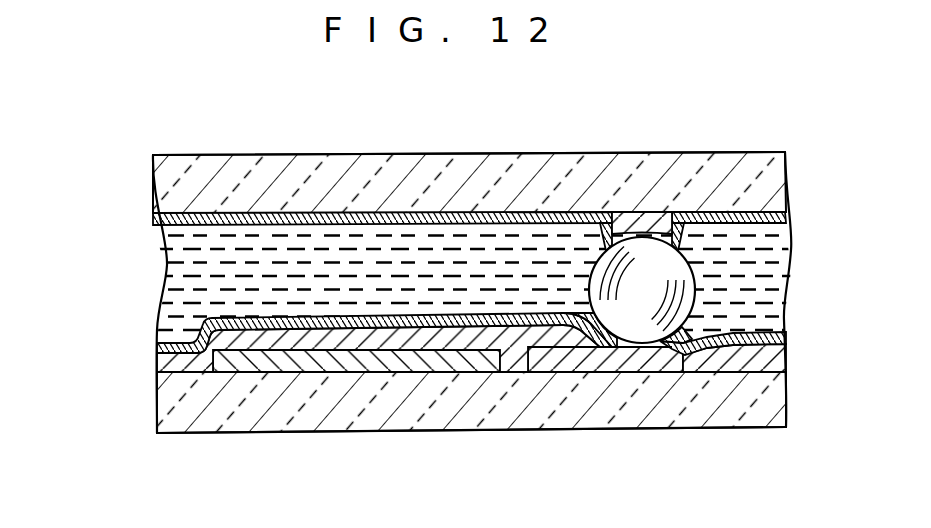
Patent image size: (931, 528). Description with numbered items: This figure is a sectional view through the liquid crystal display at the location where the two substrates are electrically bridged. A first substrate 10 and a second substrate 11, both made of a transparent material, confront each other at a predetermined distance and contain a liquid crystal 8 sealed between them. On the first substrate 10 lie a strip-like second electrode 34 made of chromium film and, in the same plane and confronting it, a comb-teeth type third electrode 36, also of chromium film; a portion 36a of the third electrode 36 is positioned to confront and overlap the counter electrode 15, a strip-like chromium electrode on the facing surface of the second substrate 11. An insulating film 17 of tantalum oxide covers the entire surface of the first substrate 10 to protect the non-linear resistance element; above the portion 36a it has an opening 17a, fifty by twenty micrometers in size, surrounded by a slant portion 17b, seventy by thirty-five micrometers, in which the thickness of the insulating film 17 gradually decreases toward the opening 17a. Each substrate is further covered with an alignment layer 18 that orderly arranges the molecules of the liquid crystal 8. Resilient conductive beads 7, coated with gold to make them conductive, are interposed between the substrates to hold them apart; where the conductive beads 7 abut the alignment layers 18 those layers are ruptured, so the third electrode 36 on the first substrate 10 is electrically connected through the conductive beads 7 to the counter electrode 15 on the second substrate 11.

The conductive beads 7 is at (683, 277).
The liquid crystal 8 is at (172, 284).
The first substrate 10 is at (778, 383).
The second substrate 11 is at (777, 168).
The counter electrode 15 is at (642, 218).
The insulating film 17 is at (160, 365).
The opening 17a is at (667, 348).
The slant portion 17b is at (578, 313).
The alignment layer 18 is at (787, 219).
The second electrode 34 is at (364, 368).
The third electrode 36 is at (560, 368).
The portion of the third electrode 36a is at (635, 353).